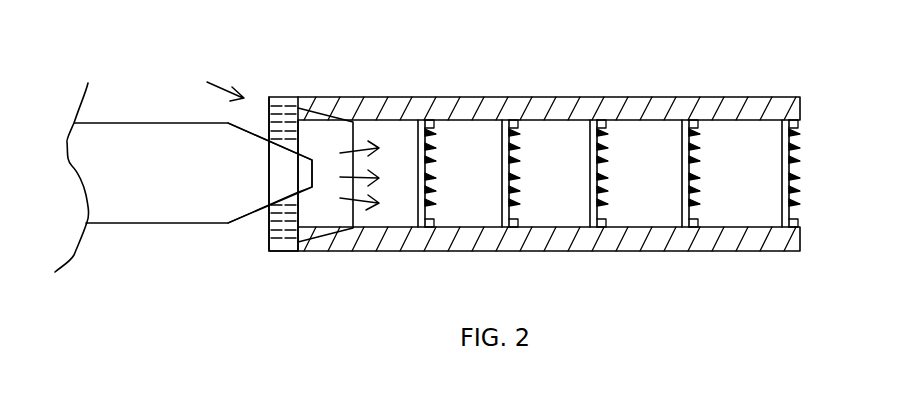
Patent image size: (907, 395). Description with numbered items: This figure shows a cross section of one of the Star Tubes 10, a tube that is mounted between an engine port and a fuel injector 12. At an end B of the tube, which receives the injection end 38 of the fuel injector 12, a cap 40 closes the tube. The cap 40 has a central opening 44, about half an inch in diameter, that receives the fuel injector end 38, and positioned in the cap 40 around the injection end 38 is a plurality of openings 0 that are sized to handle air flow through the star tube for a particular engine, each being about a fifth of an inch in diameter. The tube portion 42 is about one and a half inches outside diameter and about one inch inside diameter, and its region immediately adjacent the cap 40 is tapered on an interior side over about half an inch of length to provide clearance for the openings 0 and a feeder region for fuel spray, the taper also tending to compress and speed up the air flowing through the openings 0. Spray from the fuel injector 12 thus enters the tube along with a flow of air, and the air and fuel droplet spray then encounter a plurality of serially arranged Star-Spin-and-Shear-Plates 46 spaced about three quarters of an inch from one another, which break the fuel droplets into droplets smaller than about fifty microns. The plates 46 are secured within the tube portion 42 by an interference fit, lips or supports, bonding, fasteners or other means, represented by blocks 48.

The Star Tube 10 is at (417, 58).
The fuel injector 12 is at (107, 223).
The injection end 38 is at (265, 186).
The cap 40 is at (285, 253).
The tube portion 42 is at (583, 98).
The central opening 44 is at (272, 205).
The Star-Spin-and-Shear-Plates 46 is at (491, 148).
The blocks 48 is at (518, 124).
The end B is at (299, 68).
The openings 0 is at (266, 107).